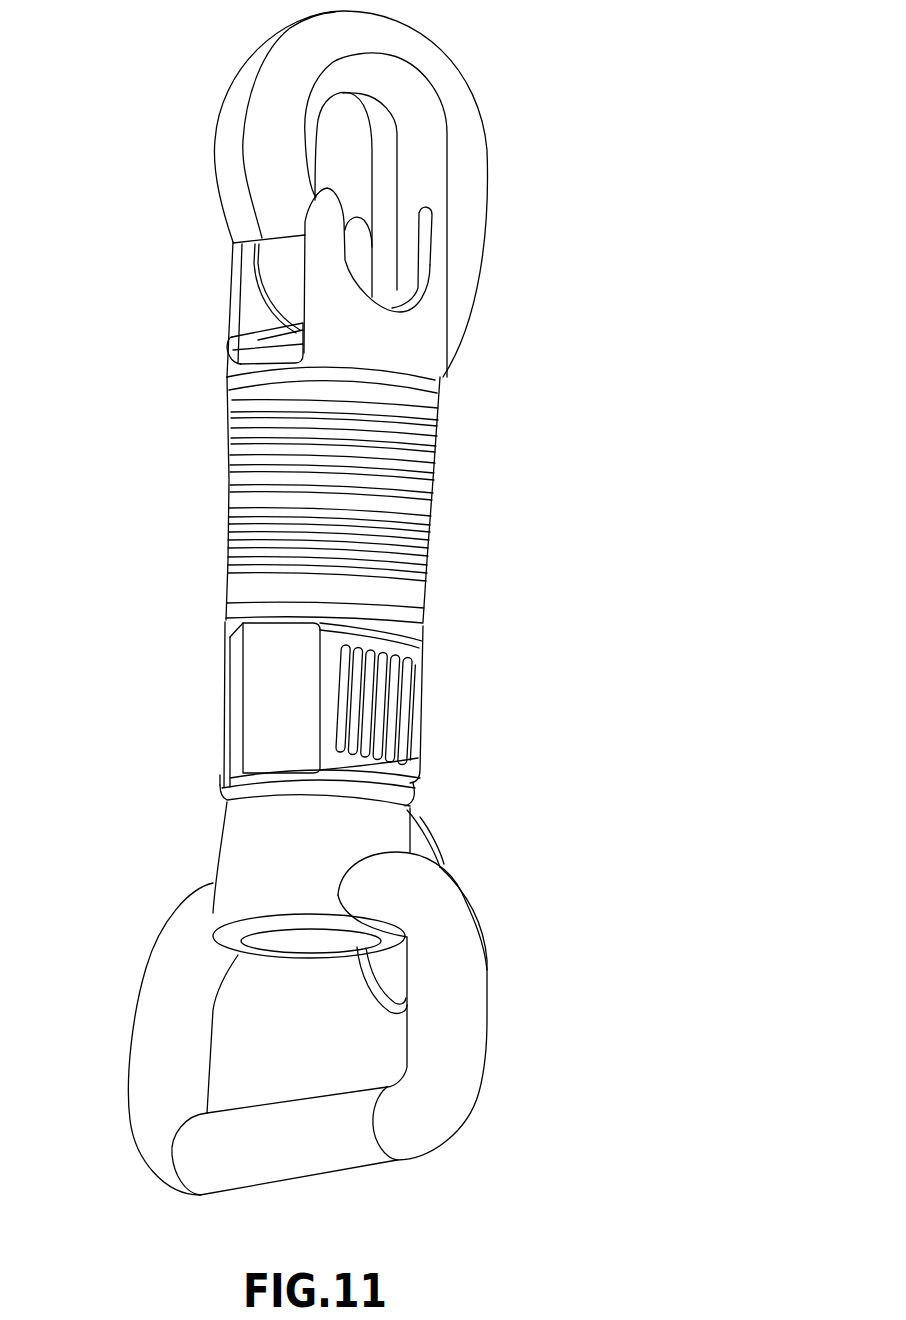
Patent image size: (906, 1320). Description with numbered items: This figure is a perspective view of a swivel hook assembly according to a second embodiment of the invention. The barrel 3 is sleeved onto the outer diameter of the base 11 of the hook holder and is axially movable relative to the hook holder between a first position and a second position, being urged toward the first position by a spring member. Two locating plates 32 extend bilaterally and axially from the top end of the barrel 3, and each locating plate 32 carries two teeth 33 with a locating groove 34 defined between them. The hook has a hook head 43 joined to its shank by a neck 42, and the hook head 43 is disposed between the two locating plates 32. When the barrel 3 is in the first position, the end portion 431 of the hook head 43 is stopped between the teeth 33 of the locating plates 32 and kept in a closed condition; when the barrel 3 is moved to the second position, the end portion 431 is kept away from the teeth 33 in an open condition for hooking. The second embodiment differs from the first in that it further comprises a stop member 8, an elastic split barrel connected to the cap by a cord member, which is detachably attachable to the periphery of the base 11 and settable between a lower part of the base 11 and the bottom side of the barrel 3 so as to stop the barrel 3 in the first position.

The barrel 3 is at (450, 484).
The hook head 43 is at (403, 88).
The end portion 431 is at (282, 217).
The teeth 33 is at (435, 237).
The locating groove 34 is at (392, 308).
The locating plates 32 is at (392, 343).
The neck 42 is at (256, 345).
The base 11 is at (287, 697).
The stop member 8 is at (397, 710).